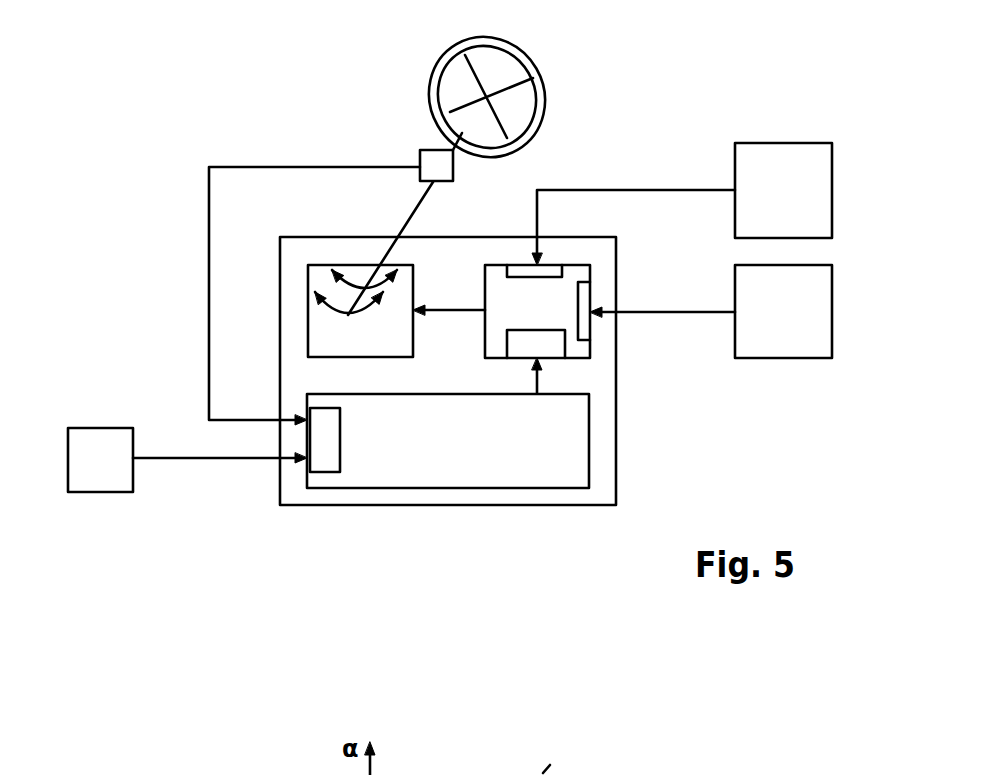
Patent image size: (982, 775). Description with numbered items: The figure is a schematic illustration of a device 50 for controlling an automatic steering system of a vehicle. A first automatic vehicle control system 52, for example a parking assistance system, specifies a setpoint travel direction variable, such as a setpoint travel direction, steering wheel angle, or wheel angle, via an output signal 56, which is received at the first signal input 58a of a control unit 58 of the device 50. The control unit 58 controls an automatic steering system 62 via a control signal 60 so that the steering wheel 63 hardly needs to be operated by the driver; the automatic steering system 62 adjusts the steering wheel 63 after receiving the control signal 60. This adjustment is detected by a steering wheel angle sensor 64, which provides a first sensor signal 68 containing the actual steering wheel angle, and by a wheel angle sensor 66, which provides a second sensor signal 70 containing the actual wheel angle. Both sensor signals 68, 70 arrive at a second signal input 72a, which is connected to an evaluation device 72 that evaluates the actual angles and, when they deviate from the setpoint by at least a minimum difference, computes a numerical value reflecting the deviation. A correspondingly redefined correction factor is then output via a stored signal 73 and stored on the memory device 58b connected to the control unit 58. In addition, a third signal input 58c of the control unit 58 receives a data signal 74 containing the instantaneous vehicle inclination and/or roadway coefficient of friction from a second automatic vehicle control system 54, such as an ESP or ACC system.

The device for controlling an automatic steering system 50 is at (617, 457).
The first automatic vehicle control system 52 is at (790, 358).
The second automatic vehicle control system 54 is at (782, 143).
The output signal 56 is at (672, 317).
The control unit 58 is at (485, 335).
The first signal input 58a is at (583, 292).
The memory device 58b is at (557, 348).
The third signal input 58c is at (556, 272).
The control signal 60 is at (455, 310).
The automatic steering system 62 is at (308, 332).
The steering wheel 63 is at (532, 78).
The steering wheel angle sensor 64 is at (419, 152).
The wheel angle sensor 66 is at (100, 428).
The first sensor signal 68 is at (208, 280).
The second sensor signal 70 is at (197, 460).
The evaluation device 72 is at (418, 490).
The second signal input 72a is at (323, 473).
The stored signal 73 is at (533, 383).
The data signal 74 is at (592, 190).